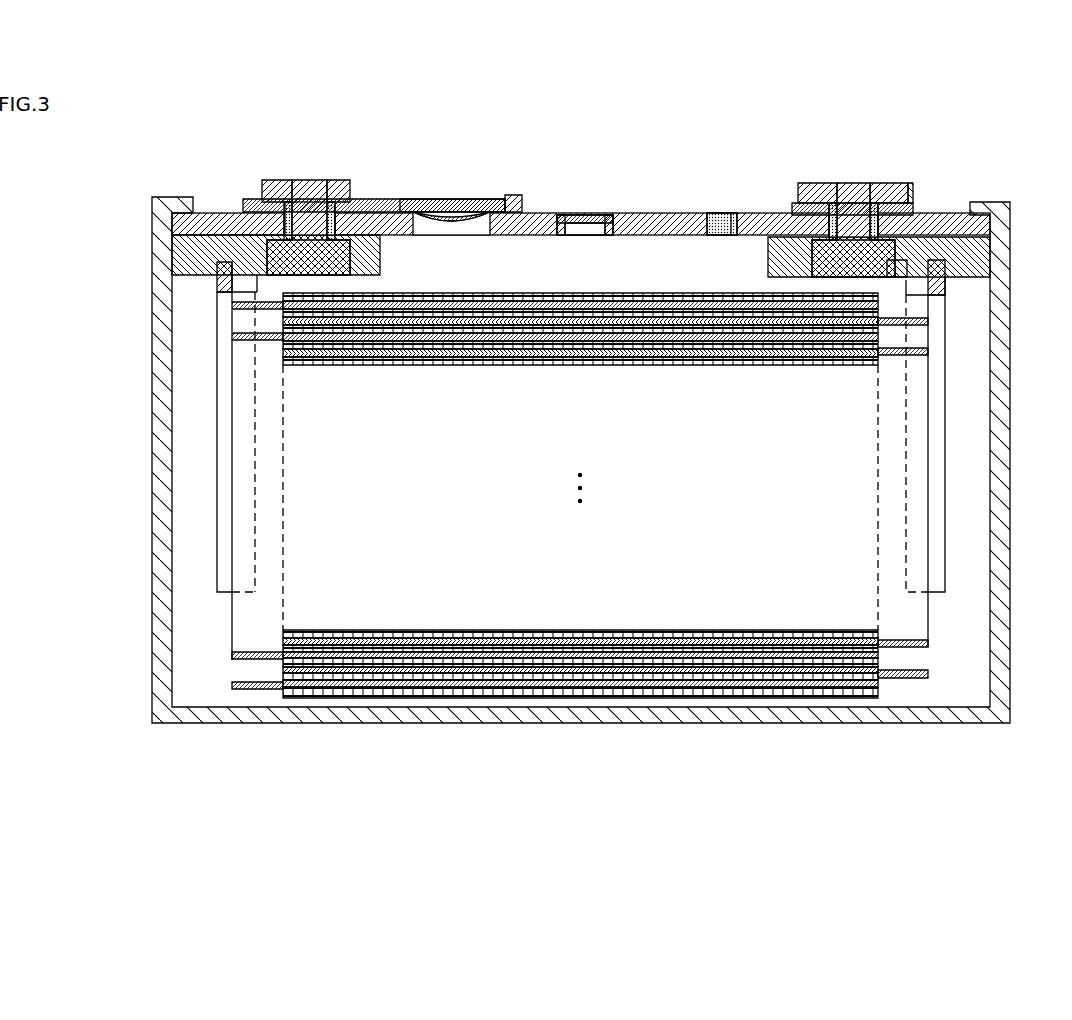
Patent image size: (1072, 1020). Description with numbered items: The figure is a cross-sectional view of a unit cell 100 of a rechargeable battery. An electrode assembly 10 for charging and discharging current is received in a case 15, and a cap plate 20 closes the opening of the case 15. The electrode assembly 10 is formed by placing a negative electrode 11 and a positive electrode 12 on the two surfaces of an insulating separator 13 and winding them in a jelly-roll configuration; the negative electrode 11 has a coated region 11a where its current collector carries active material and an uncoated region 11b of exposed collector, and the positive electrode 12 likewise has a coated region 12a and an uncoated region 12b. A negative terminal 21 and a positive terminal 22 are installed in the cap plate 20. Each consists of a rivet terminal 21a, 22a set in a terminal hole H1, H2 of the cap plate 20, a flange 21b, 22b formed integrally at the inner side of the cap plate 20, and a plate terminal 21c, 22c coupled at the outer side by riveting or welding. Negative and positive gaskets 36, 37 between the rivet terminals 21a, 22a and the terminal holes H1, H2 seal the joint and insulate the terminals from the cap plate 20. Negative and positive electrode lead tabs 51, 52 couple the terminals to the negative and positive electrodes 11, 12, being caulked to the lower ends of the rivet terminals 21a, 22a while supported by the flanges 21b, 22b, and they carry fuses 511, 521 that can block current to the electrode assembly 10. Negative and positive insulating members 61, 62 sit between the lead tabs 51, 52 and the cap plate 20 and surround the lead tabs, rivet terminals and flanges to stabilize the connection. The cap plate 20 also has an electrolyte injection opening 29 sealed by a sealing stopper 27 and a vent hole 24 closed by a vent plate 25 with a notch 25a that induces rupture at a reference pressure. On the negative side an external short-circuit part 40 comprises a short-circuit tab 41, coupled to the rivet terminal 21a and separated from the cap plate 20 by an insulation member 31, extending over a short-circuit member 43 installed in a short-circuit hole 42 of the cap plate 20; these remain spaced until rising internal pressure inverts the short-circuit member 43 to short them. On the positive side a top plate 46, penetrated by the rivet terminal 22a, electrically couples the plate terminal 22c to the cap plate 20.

The unit cell 100 is at (578, 124).
The electrode assembly 10 is at (586, 554).
The negative electrode 11 is at (555, 555).
The coated region of negative electrode 11a is at (376, 690).
The uncoated region of negative electrode 11b is at (257, 539).
The positive electrode 12 is at (611, 566).
The coated region of positive electrode 12a is at (805, 680).
The uncoated region of positive electrode 12b is at (906, 549).
The separator 13 is at (595, 697).
The case 15 is at (1002, 410).
The cap plate 20 is at (648, 213).
The negative terminal 21 is at (312, 176).
The rivet terminal of negative terminal 21a is at (318, 292).
The flange of negative terminal 21b is at (360, 199).
The plate terminal of negative terminal 21c is at (334, 184).
The positive terminal 22 is at (853, 178).
The rivet terminal of positive terminal 22a is at (905, 305).
The flange of positive terminal 22b is at (792, 240).
The plate terminal of positive terminal 22c is at (900, 185).
The vent hole 24 is at (590, 236).
The vent plate 25 is at (602, 215).
The notch 25a is at (568, 215).
The sealing stopper 27 is at (730, 213).
The electrolyte injection opening 29 is at (716, 212).
The insulation member 31 is at (513, 195).
The negative gasket 36 is at (284, 215).
The positive gasket 37 is at (832, 205).
The external short-circuit part 40 is at (447, 198).
The short-circuit tab 41 is at (412, 199).
The short-circuit hole 42 is at (480, 224).
The short-circuit member 43 is at (441, 226).
The top plate 46 is at (910, 195).
The negative electrode lead tab 51 is at (213, 405).
The fuse of negative electrode lead tab 511 is at (235, 290).
The positive electrode lead tab 52 is at (948, 560).
The fuse of positive electrode lead tab 521 is at (940, 280).
The negative insulating member 61 is at (190, 248).
The positive insulating member 62 is at (972, 258).
The terminal hole H1 is at (286, 210).
The terminal hole H2 is at (873, 205).